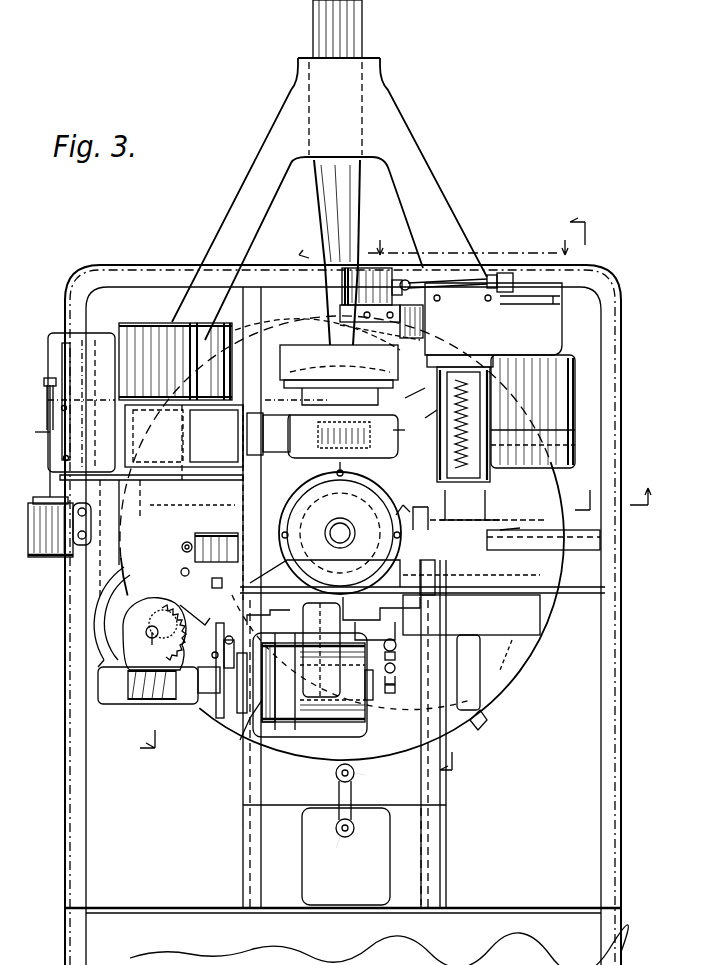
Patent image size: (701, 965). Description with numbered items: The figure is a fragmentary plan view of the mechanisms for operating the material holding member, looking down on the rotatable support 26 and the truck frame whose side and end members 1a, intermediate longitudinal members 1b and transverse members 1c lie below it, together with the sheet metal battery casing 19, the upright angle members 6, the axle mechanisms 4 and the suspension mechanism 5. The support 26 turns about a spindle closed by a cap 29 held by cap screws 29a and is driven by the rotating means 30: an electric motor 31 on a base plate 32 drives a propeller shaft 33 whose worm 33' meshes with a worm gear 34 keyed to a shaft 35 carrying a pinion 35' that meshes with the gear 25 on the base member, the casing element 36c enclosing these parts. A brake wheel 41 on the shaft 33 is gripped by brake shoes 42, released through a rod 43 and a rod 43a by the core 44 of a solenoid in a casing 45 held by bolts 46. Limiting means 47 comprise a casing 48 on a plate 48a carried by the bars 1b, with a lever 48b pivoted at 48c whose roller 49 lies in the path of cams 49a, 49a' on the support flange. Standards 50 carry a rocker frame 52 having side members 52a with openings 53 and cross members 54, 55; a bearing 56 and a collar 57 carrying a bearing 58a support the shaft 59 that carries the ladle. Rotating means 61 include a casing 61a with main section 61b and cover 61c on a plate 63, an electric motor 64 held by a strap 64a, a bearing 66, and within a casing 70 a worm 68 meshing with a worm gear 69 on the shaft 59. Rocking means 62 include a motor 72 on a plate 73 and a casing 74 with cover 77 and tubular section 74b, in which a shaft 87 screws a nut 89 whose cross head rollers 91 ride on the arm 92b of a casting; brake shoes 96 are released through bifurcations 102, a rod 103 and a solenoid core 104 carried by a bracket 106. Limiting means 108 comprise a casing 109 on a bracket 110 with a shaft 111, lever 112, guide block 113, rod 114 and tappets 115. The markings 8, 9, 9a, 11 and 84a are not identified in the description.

The side and end members 1a is at (65, 712).
The intermediate longitudinal members 1b is at (243, 808).
The transverse members 1c is at (575, 553).
The sheet metal casing 19 is at (500, 908).
The rod or shaft 59 is at (362, 12).
The bearing 56 is at (328, 95).
The collar 57 is at (312, 340).
The cross member 54 is at (280, 358).
The bearing 58a is at (310, 408).
The casing 70 is at (308, 456).
The worm 68 is at (370, 450).
The worm gear 69 is at (401, 445).
The bearing 66 is at (270, 452).
The indexing dial 9 is at (333, 470).
The cross member 55 is at (352, 545).
The cap 29 is at (300, 512).
The cap screws 29a is at (283, 530).
The section line 8 is at (403, 501).
The bracket 110 is at (355, 570).
The aligned openings 53 is at (300, 570).
The electric motor 64 is at (165, 330).
The strap 64a is at (205, 323).
The rotating means 61 is at (107, 345).
The casing 61a is at (156, 476).
The main section 61b is at (100, 340).
The cover or plate 61c is at (94, 404).
The plate 63 is at (190, 470).
The standards 50 is at (243, 476).
The side members 52a is at (200, 505).
The frame or rocker 52 is at (505, 528).
The casing 45 is at (216, 536).
The bolts 46 is at (182, 548).
The core 44 is at (217, 578).
The support or table 26 is at (118, 566).
The casing element 36c is at (118, 597).
The worm gear 34 is at (124, 630).
The shaft 35 is at (161, 634).
The pinion 35' is at (144, 616).
The gear 25 is at (195, 606).
The worm 33' is at (148, 700).
The suspension mechanism 5 is at (153, 740).
The wheel or pulley 41 is at (208, 700).
The propeller shaft 33 is at (201, 691).
The brake shoes 42 is at (242, 713).
The rod 43 is at (230, 640).
The rod 43a is at (272, 620).
The tappet or cam 49a' is at (220, 746).
The limiting means 108 is at (313, 681).
The casing 109 is at (308, 618).
The rotating means 30 is at (296, 737).
The electric motor 31 is at (380, 704).
The shaft 111 is at (378, 618).
The lever 112 is at (396, 645).
The tappets 115 is at (396, 656).
The guide block 113 is at (396, 668).
The rod 114 is at (397, 684).
The rollers 91 is at (455, 605).
The dial segment 9a is at (520, 640).
The tappet or cam 49a is at (488, 730).
The angle members 6 is at (505, 492).
The power transmitting and axle mechanisms 4 is at (646, 500).
The base plate 32 is at (336, 776).
The roller 49 is at (356, 775).
The limiting means 47 is at (352, 800).
The lever 48b is at (354, 826).
The pivot 48c is at (340, 836).
The casing 48 is at (380, 855).
The plate 48a is at (430, 860).
The core 104 is at (420, 258).
The rod 103 is at (400, 272).
The bifurcations 102 is at (508, 270).
The brake shoes 96 is at (534, 288).
The section line 11 is at (472, 250).
The bracket 106 is at (425, 318).
The cover 77 is at (565, 332).
The housing flange 84a is at (572, 338).
The casing 74 is at (425, 362).
The shaft 87 is at (470, 368).
The supporting plate 73 is at (408, 394).
The tubular section 74b is at (418, 411).
The motor 72 is at (573, 395).
The rocking means 62 is at (562, 470).
The nut 89 is at (480, 510).
The arm 92b is at (516, 530).